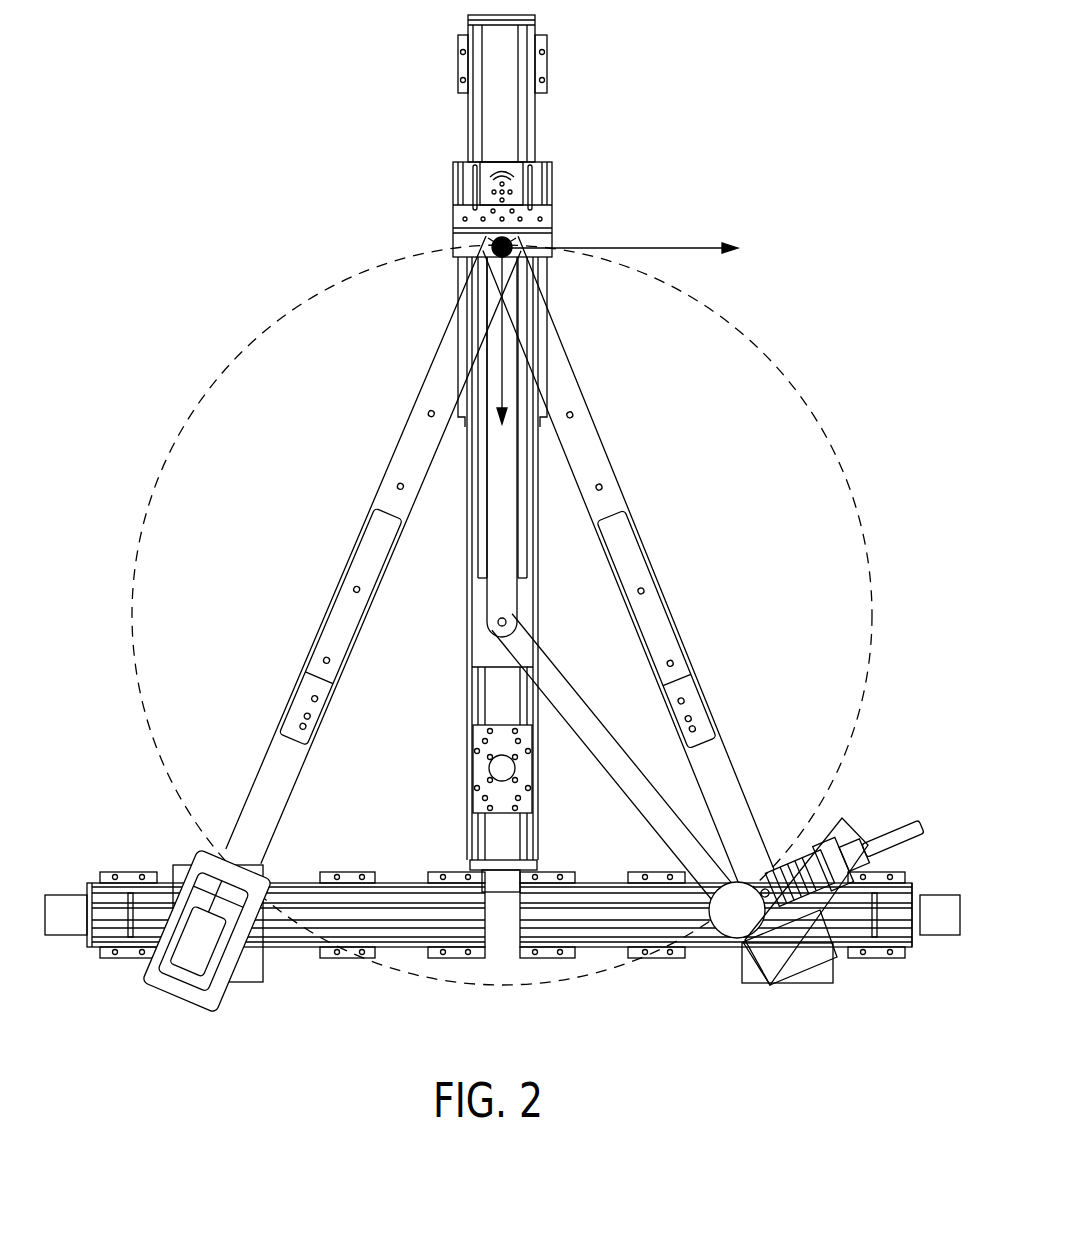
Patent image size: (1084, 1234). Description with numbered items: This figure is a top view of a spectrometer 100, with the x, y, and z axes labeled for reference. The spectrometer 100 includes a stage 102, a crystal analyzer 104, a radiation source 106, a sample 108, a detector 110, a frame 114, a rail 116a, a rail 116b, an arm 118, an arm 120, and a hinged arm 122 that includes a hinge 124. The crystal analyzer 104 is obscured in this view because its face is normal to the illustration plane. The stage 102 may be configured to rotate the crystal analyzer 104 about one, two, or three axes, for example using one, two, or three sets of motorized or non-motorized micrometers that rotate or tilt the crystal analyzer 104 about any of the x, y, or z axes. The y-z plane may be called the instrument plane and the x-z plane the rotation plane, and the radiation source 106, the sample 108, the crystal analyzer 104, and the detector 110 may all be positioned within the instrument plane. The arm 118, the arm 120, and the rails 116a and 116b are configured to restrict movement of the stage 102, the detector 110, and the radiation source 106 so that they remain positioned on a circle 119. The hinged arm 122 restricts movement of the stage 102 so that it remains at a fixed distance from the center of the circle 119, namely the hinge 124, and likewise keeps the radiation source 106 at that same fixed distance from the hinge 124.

The spectrometer 100 is at (630, 120).
The stage 102 is at (536, 185).
The crystal analyzer 104 is at (470, 258).
The radiation source 106 is at (820, 872).
The sample 108 is at (722, 893).
The detector 110 is at (193, 983).
The frame 114 is at (483, 683).
The rail 116a is at (356, 898).
The rail 116b is at (590, 898).
The arm 118 is at (288, 768).
The circle 119 is at (145, 512).
The arm 120 is at (645, 613).
The hinged arm 122 is at (497, 540).
The hinge 124 is at (497, 624).